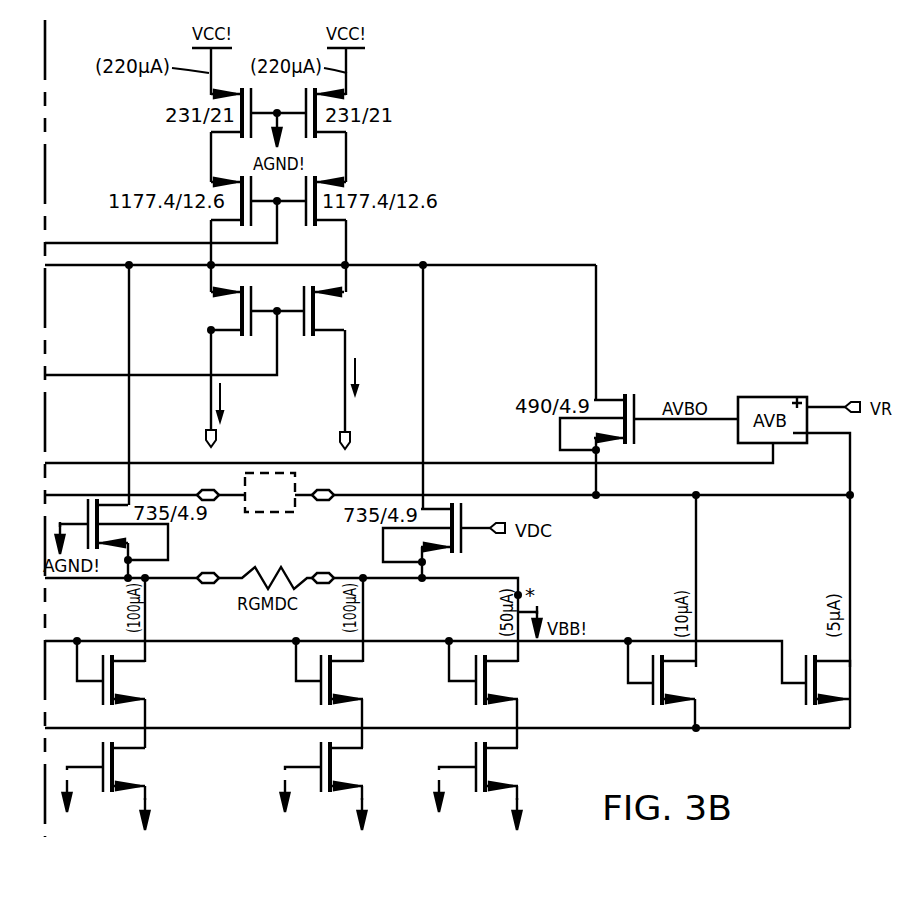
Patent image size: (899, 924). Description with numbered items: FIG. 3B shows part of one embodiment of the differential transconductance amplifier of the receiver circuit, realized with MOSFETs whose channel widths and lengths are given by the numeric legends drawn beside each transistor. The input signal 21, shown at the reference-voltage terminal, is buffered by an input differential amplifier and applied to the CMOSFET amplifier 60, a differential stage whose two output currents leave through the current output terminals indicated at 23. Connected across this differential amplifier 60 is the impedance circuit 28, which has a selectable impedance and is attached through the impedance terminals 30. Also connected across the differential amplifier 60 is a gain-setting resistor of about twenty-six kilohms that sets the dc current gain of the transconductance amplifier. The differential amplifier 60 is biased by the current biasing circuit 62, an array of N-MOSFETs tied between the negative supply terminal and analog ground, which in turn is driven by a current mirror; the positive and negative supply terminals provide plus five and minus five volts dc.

The input signal 21 is at (822, 407).
The differential current output terminals IMINUS/IPLUS 23 is at (216, 426).
The impedance circuit 28 is at (254, 512).
The impedance terminals 30 is at (222, 501).
The CMOSFET amplifier 60 is at (342, 416).
The current biasing circuit 62 is at (262, 714).